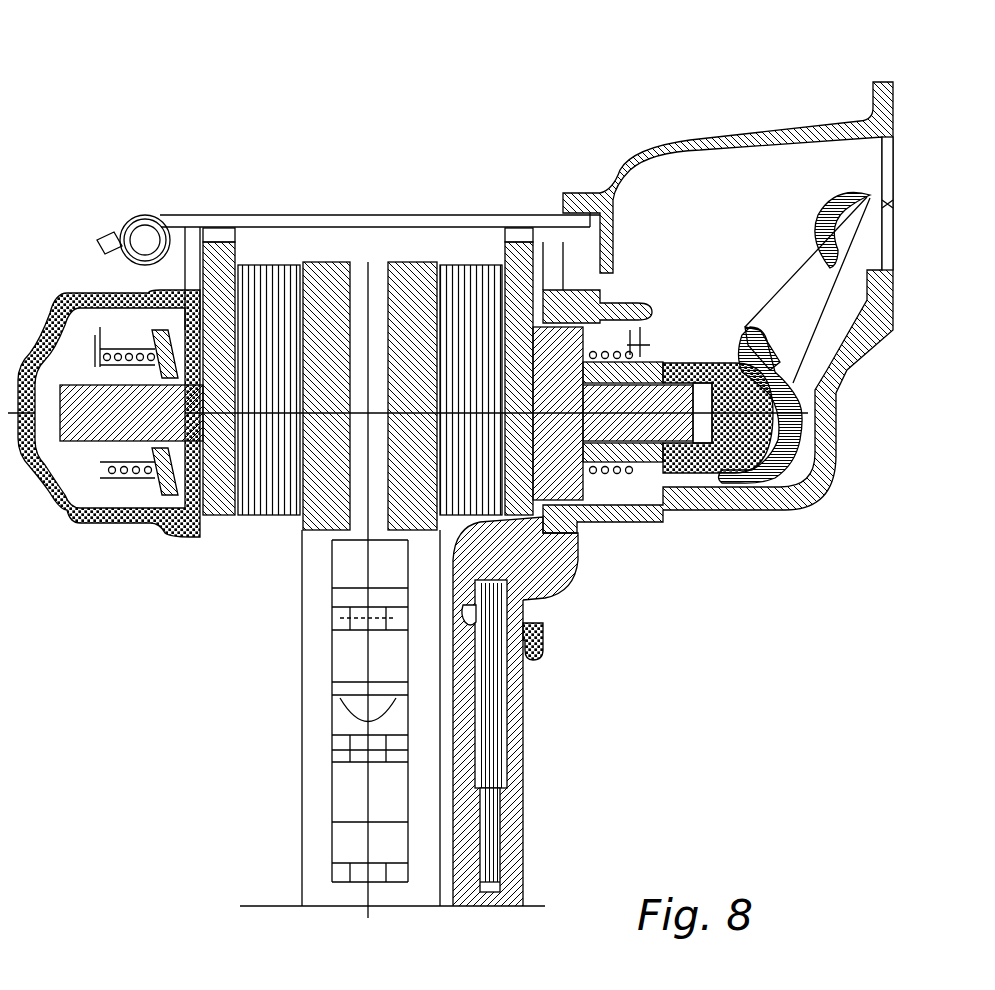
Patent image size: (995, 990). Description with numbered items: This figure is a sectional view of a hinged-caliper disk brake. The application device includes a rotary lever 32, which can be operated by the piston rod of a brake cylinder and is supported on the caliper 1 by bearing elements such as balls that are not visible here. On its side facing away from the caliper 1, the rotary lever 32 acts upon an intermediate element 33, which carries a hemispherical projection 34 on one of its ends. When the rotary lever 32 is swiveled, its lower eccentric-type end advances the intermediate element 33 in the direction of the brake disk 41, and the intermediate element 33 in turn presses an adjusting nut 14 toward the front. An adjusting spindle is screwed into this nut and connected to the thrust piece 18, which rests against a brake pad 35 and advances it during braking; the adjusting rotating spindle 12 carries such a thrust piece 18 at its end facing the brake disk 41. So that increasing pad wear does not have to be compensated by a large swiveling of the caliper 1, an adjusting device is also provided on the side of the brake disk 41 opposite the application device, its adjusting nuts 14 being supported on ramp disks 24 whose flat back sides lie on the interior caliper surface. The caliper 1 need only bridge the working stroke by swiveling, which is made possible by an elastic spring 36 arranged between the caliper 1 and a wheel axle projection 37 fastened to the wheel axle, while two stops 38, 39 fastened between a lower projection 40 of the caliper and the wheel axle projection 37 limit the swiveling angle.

The caliper 1 is at (723, 497).
The adjusting rotating spindle 12 is at (62, 400).
The adjusting nut 14 is at (653, 370).
The thrust piece 18 is at (190, 440).
The ramp disk 24 is at (60, 328).
The rotary lever 32 is at (797, 290).
The intermediate element 33 is at (683, 370).
The hemispherical projection 34 is at (750, 405).
The brake pad 35 is at (462, 285).
The elastic spring 36 is at (483, 713).
The wheel axle projection 37 is at (512, 822).
The stop 38 is at (470, 613).
The stop 39 is at (530, 618).
The lower projection 40 is at (537, 572).
The brake disk 41 is at (330, 285).